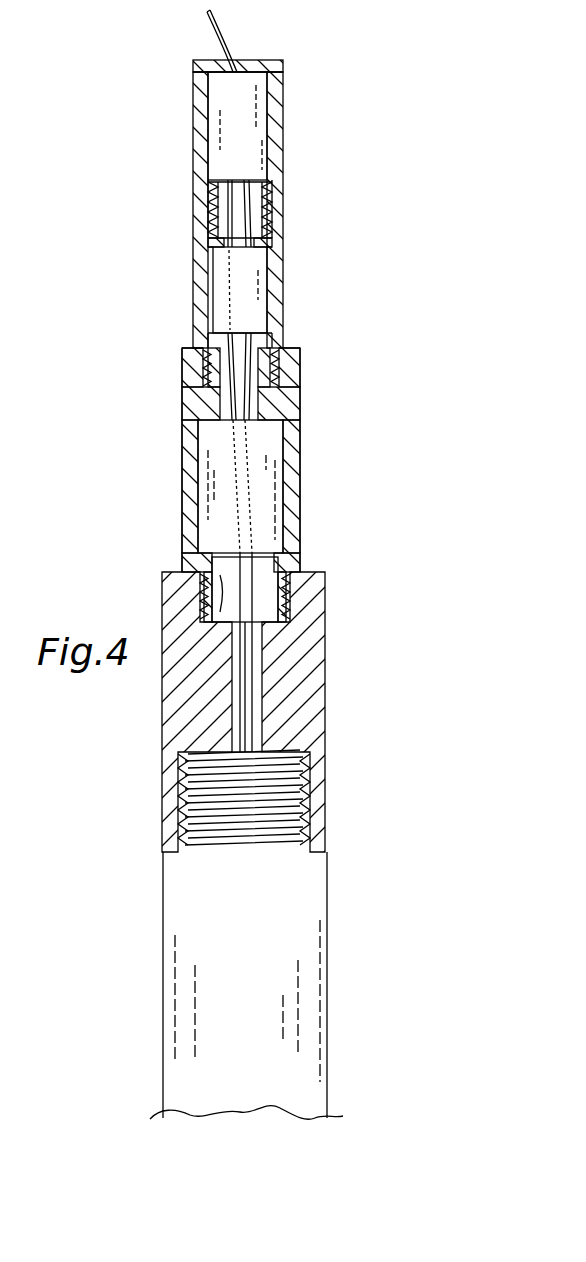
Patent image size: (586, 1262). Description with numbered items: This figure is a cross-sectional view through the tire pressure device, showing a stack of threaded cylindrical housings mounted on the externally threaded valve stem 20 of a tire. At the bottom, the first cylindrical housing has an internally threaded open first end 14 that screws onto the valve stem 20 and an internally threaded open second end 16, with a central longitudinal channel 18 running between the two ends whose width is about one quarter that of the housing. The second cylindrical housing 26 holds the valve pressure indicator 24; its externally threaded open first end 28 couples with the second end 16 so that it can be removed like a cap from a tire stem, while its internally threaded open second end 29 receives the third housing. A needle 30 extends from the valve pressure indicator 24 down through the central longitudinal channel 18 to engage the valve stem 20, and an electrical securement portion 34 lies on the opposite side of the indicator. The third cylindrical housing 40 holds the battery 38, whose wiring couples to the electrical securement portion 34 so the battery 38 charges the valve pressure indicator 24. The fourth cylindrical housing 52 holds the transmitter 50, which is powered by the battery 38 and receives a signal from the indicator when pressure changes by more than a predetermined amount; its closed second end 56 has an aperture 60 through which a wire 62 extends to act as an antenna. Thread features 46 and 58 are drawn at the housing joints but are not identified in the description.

The internally threaded open first end 14 is at (312, 852).
The internally threaded open second end 16 is at (300, 565).
The central longitudinal channel 18 is at (262, 657).
The valve stem 20 is at (288, 1010).
The valve pressure indicator 24 is at (270, 460).
The second cylindrical housing 26 is at (282, 384).
The externally threaded open first end 28 is at (210, 560).
The internally threaded open second end 29 is at (287, 360).
The needle 30 is at (264, 637).
The electrical securement portion 34 is at (222, 412).
The battery 38 is at (258, 275).
The third cylindrical housing 40 is at (197, 275).
The threads 46 is at (205, 358).
The transmitter 50 is at (243, 108).
The fourth cylindrical housing 52 is at (193, 130).
The closed second end 56 is at (262, 60).
The internal threads 58 is at (213, 200).
The aperture 60 is at (197, 66).
The wire 62 is at (207, 14).